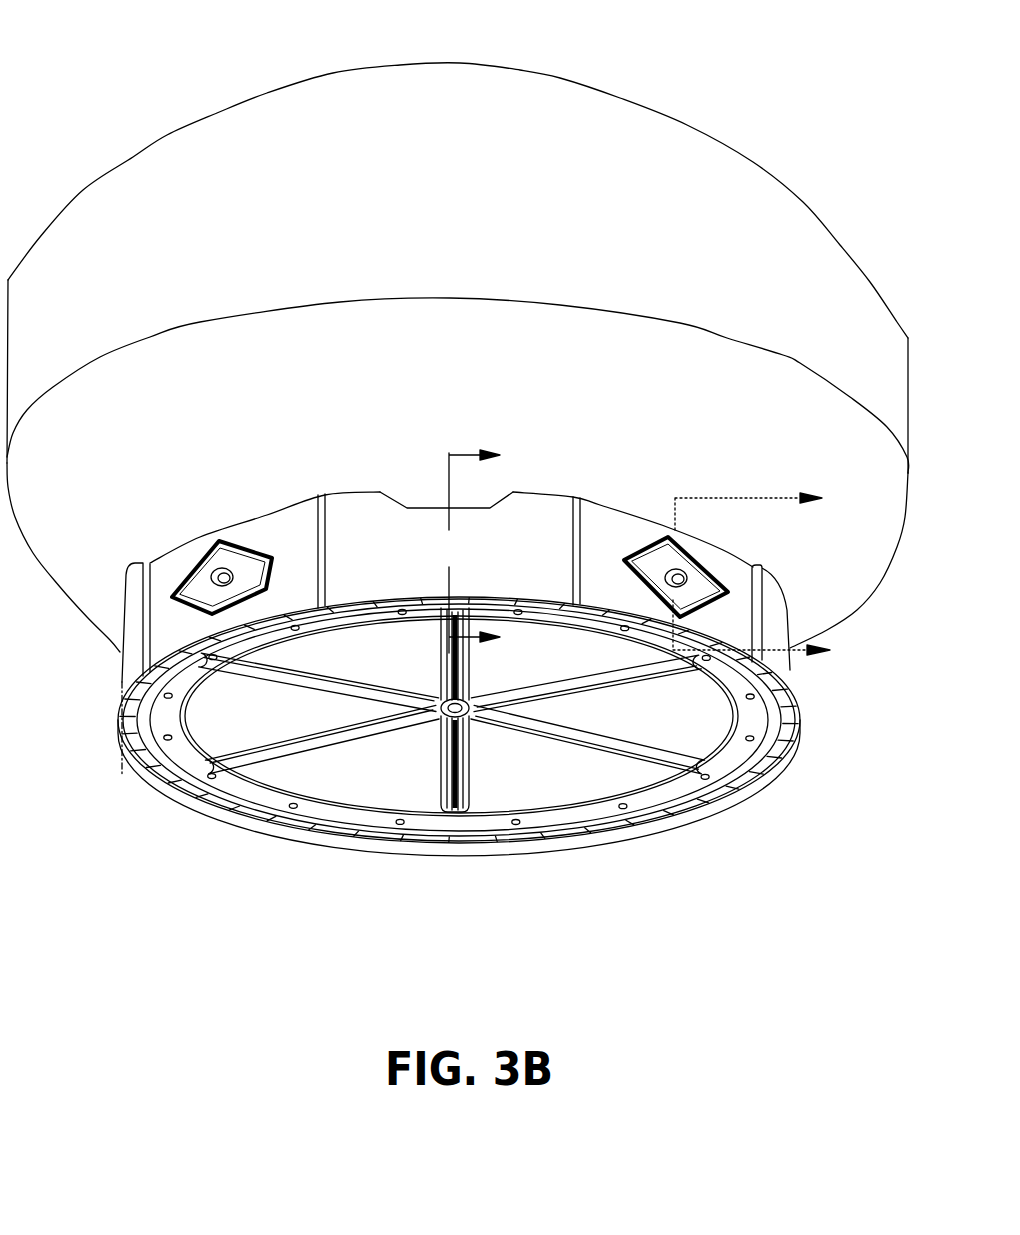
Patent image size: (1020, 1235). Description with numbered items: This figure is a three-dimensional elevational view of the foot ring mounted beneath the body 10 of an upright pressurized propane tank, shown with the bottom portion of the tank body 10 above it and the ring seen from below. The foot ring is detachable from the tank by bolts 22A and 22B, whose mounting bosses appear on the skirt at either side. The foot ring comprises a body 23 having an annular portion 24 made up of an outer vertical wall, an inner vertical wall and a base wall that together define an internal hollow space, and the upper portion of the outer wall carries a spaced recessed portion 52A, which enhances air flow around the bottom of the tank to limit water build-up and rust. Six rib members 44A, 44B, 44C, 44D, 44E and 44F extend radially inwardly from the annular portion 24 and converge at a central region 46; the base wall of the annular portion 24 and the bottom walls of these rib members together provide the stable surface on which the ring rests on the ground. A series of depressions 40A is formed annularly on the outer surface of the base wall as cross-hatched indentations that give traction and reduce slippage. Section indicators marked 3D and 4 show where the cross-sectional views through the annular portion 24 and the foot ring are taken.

The body 10 is at (680, 203).
The bolt 22A is at (222, 565).
The bolt 22B is at (672, 560).
The body 23 is at (120, 655).
The annular portion 24 is at (387, 547).
The recessed portion 52A is at (433, 490).
The depressions 40A is at (743, 783).
The rib member 44A is at (545, 690).
The rib member 44B is at (578, 750).
The rib member 44C is at (428, 722).
The rib member 44D is at (430, 755).
The rib member 44E is at (393, 692).
The rib member 44F is at (330, 690).
The central region 46 is at (440, 710).
The section line 3D is at (498, 547).
The section line 4 is at (765, 573).